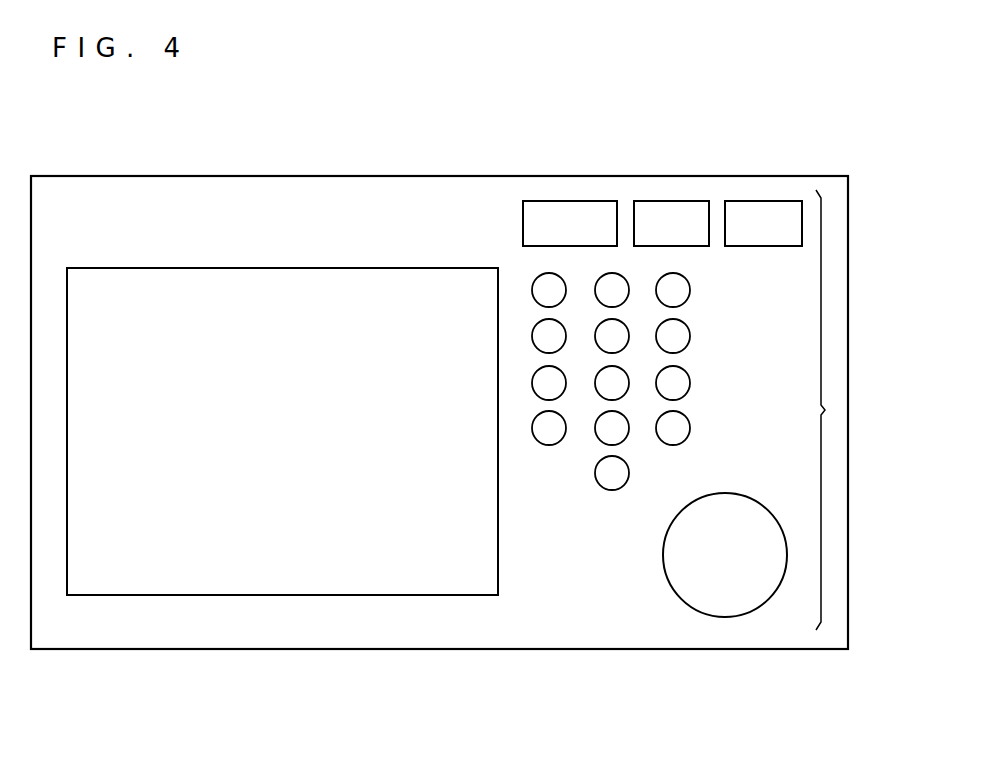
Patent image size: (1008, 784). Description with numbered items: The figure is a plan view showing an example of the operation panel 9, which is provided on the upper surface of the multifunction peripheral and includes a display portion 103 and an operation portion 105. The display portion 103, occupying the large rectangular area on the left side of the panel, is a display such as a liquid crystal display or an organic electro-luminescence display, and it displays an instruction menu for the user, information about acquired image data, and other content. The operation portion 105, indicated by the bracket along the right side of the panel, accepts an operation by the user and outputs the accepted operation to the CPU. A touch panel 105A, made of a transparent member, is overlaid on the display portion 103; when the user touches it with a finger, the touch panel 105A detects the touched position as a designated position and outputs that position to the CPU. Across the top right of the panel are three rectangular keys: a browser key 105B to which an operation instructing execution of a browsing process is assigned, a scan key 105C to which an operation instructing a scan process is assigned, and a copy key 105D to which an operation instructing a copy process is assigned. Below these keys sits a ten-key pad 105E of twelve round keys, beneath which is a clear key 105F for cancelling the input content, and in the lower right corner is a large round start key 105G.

The operation panel 9 is at (343, 175).
The display portion 103 is at (252, 268).
The touch panel 105A is at (303, 548).
The browser key 105B is at (572, 201).
The scan key 105C is at (666, 201).
The copy key 105D is at (757, 201).
The ten-key pad 105E is at (703, 270).
The clear key 105F is at (600, 485).
The start key 105G is at (666, 575).
The operation portion 105 is at (830, 412).